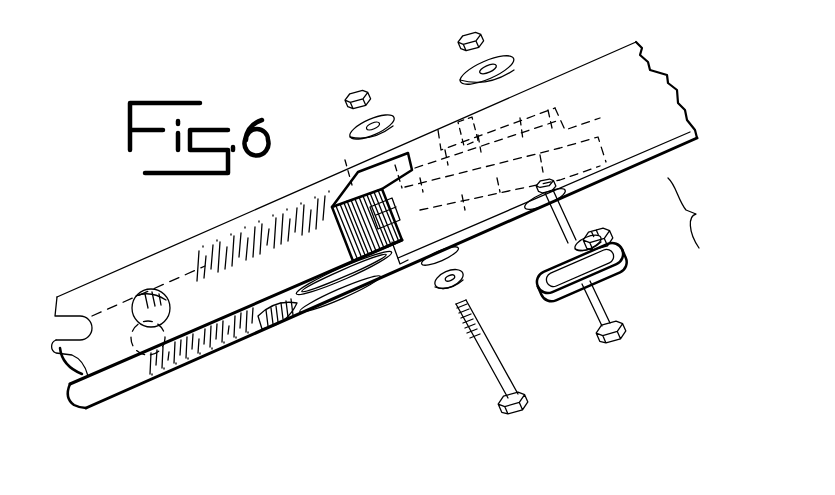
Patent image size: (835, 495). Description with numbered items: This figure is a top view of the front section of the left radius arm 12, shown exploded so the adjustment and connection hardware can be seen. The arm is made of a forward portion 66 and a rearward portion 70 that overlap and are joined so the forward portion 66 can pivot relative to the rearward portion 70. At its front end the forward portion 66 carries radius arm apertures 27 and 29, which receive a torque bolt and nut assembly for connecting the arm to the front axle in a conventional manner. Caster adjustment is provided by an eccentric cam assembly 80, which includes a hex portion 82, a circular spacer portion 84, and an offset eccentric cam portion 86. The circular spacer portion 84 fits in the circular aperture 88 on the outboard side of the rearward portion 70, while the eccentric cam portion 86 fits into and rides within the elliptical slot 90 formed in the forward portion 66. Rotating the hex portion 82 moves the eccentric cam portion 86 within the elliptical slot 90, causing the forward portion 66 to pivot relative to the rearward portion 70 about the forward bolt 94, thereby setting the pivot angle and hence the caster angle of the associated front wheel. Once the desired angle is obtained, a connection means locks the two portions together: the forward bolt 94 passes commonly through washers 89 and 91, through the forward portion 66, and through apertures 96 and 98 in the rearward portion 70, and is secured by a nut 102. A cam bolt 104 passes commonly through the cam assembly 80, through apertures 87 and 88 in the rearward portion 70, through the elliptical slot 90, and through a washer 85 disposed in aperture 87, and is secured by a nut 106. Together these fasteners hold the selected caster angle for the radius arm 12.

The radius arm 12 is at (352, 321).
The radius arm aperture 27 is at (152, 289).
The radius arm aperture 29 is at (166, 357).
The forward portion 66 is at (90, 407).
The rearward portion 70 is at (617, 44).
The eccentric cam assembly 80 is at (699, 213).
The hex portion 82 is at (622, 265).
The circular spacer portion 84 is at (610, 232).
The washer 85 is at (517, 55).
The eccentric cam portion 86 is at (592, 230).
The aperture 87 is at (458, 122).
The circular aperture 88 is at (585, 183).
The washer 89 is at (437, 293).
The elliptical slot 90 is at (571, 122).
The washer 91 is at (350, 138).
The forward bolt 94 is at (492, 373).
The aperture 96 is at (462, 253).
The aperture 98 is at (322, 178).
The nut 102 is at (343, 102).
The cam bolt 104 is at (625, 328).
The nut 106 is at (488, 38).